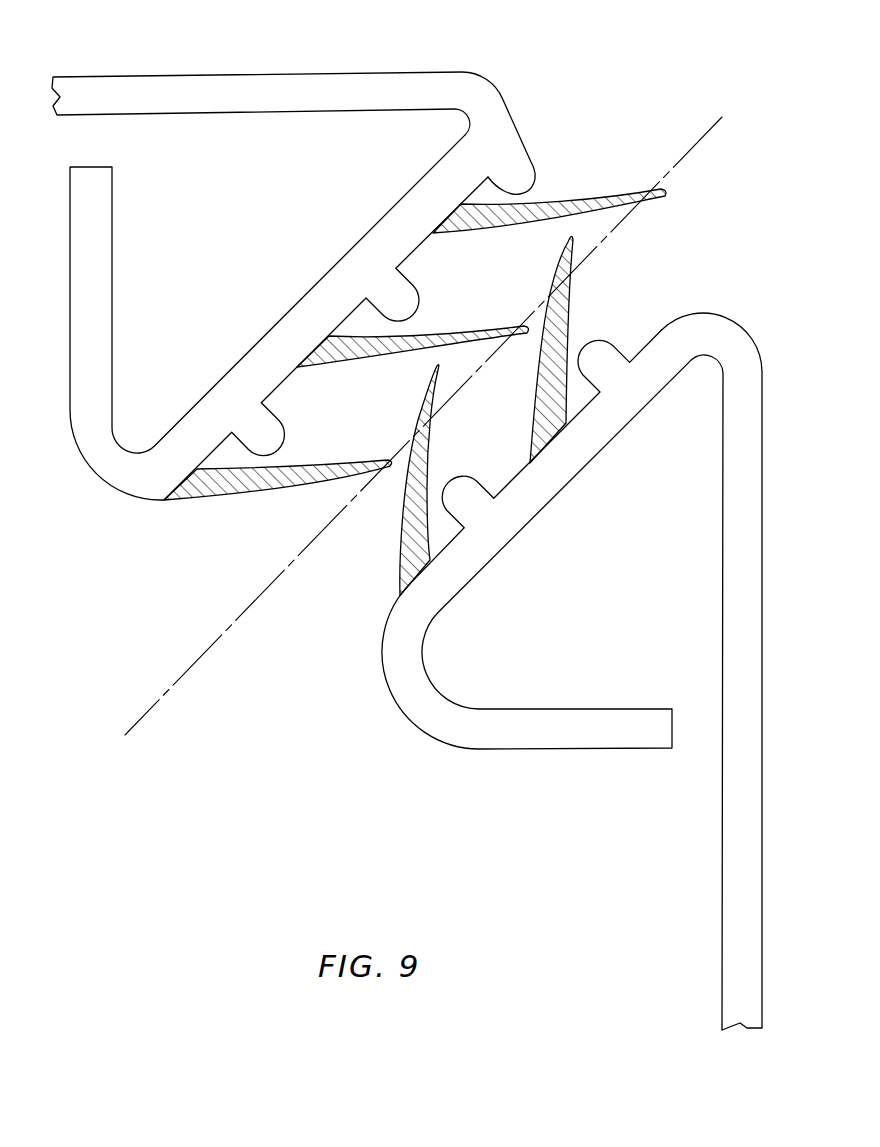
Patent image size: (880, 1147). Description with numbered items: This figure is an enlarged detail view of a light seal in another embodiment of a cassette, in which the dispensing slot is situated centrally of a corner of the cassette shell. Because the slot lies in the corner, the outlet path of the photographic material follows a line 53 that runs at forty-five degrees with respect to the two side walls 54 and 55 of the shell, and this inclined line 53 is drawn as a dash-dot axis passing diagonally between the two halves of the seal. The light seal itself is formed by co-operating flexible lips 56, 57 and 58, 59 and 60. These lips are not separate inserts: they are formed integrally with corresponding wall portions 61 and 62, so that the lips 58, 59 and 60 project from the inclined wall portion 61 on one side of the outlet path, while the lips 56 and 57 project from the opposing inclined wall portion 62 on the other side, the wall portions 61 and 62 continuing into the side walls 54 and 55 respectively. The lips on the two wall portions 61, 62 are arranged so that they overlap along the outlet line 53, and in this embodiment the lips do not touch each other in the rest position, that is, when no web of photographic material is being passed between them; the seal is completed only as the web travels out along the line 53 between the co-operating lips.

The line 53 is at (690, 152).
The side wall 54 is at (319, 72).
The side wall 55 is at (722, 878).
The flexible lip 56 is at (404, 523).
The flexible lip 57 is at (569, 323).
The flexible lip 58 is at (213, 495).
The flexible lip 59 is at (352, 358).
The flexible lip 60 is at (550, 204).
The wall portion 61 is at (299, 300).
The wall portion 62 is at (522, 530).